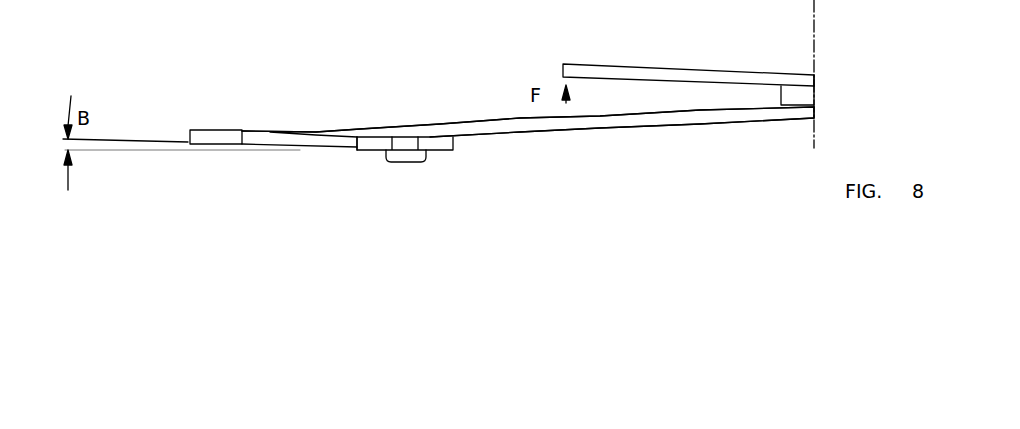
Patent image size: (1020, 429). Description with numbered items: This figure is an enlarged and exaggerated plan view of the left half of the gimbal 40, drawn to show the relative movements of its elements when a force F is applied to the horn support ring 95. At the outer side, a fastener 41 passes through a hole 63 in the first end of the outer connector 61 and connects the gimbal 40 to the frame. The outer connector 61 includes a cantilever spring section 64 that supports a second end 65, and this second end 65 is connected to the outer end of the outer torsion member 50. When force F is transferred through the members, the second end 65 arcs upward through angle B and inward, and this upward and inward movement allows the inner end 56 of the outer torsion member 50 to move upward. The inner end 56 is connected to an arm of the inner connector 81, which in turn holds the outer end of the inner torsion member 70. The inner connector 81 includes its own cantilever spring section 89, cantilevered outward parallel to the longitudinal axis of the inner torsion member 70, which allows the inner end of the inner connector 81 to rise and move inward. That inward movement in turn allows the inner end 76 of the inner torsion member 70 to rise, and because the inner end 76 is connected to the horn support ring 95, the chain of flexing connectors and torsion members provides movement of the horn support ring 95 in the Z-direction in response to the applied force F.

The gimbal 40 is at (722, 156).
The fastener 41 is at (408, 165).
The outer torsion member 50 is at (350, 127).
The inner end of outer torsion member 56 is at (481, 120).
The outer connector 61 is at (366, 152).
The hole 63 is at (402, 143).
The cantilever spring section 64 is at (279, 140).
The second end 65 is at (200, 130).
The inner torsion member 70 is at (805, 96).
The inner end of inner torsion member 76 is at (815, 82).
The inner connector 81 is at (608, 127).
The cantilever spring section 89 is at (775, 121).
The horn support ring 95 is at (572, 72).